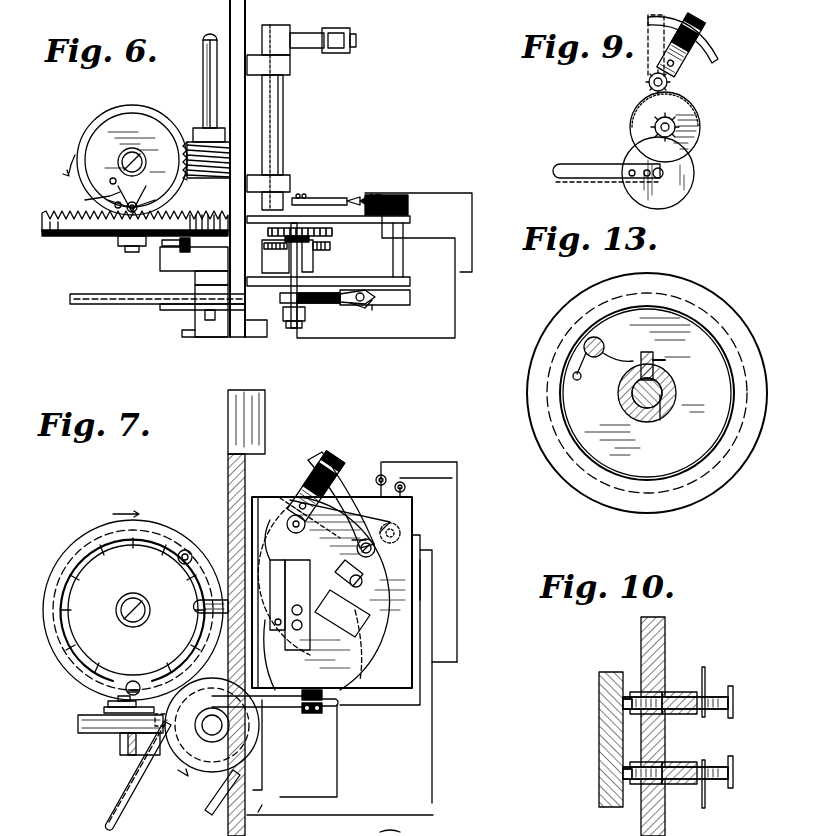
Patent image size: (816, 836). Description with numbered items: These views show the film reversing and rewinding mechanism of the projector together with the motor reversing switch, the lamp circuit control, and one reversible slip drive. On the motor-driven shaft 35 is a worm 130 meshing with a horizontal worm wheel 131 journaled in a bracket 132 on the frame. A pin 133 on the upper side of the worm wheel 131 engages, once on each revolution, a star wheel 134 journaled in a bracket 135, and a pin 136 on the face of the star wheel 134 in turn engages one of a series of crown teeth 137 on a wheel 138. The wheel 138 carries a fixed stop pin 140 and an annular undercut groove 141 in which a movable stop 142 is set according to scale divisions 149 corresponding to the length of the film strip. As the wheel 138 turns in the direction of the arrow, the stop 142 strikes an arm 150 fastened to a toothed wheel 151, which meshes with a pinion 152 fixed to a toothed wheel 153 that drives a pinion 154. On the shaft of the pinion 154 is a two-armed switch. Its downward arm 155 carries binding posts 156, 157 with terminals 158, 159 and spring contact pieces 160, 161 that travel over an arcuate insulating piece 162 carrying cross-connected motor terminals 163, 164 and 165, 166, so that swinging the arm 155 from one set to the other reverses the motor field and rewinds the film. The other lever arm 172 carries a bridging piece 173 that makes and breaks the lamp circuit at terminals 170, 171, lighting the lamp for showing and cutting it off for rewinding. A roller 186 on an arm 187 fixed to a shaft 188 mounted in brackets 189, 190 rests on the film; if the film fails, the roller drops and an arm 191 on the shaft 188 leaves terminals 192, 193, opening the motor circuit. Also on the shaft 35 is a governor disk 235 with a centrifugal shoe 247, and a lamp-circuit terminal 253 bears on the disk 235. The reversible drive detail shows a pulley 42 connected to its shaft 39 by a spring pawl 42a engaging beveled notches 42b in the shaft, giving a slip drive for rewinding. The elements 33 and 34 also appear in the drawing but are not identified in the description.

In FIG. 6, the shaft 33 is at (130, 304).
In FIG. 7, the shaft 33 is at (120, 800).
In FIG. 6, the pulley 34 is at (180, 308).
In FIG. 7, the pulley 34 is at (214, 680).
In FIG. 6, the shaft 35 is at (203, 56).
In FIG. 7, the shaft 35 is at (212, 730).
In FIG. 13, the shaft 39 is at (618, 398).
In FIG. 13, the pulley 42 is at (536, 395).
In FIG. 13, the spring pawl 42a is at (646, 354).
In FIG. 13, the beveled notches 42b is at (665, 443).
In FIG. 6, the worm 130 is at (196, 130).
In FIG. 6, the worm wheel 131 is at (80, 126).
In FIG. 7, the worm wheel 131 is at (78, 726).
In FIG. 7, the bracket 132 is at (120, 750).
In FIG. 6, the pin 133 is at (112, 178).
In FIG. 7, the pin 133 is at (104, 710).
In FIG. 6, the star wheel 134 is at (100, 194).
In FIG. 7, the star wheel 134 is at (108, 704).
In FIG. 6, the bracket 135 is at (162, 193).
In FIG. 6, the pin 136 is at (112, 205).
In FIG. 6, the crown teeth 137 is at (42, 220).
In FIG. 6, the wheel 138 is at (78, 238).
In FIG. 7, the wheel 138 is at (70, 568).
In FIG. 6, the stop pin 140 is at (130, 252).
In FIG. 7, the stop pin 140 is at (134, 681).
In FIG. 7, the annular undercut groove 141 is at (60, 662).
In FIG. 6, the movable stop 142 is at (180, 246).
In FIG. 7, the movable stop 142 is at (186, 549).
In FIG. 7, the scale divisions 149 is at (98, 530).
In FIG. 9, the arm 150 is at (578, 166).
In FIG. 7, the arm 150 is at (198, 608).
In FIG. 6, the toothed disk 151 is at (277, 256).
In FIG. 9, the toothed disk 151 is at (680, 196).
In FIG. 6, the pinion 152 is at (314, 256).
In FIG. 9, the pinion 152 is at (678, 124).
In FIG. 6, the toothed wheel 153 is at (330, 247).
In FIG. 9, the toothed wheel 153 is at (636, 123).
In FIG. 6, the pinion 154 is at (300, 232).
In FIG. 9, the pinion 154 is at (648, 84).
In FIG. 6, the arm 155 is at (305, 314).
In FIG. 10, the arm 155 is at (666, 646).
In FIG. 7, the arm 155 is at (298, 652).
In FIG. 6, the binding post 156 is at (194, 259).
In FIG. 10, the binding post 156 is at (712, 696).
In FIG. 10, the binding post 157 is at (710, 766).
In FIG. 10, the terminal 158 is at (706, 672).
In FIG. 10, the terminal 159 is at (706, 804).
In FIG. 10, the spring contact piece 160 is at (627, 696).
In FIG. 10, the spring contact piece 161 is at (627, 782).
In FIG. 6, the arcuate piece 162 is at (340, 306).
In FIG. 10, the arcuate piece 162 is at (598, 742).
In FIG. 7, the arcuate piece 162 is at (382, 580).
In FIG. 7, the motor circuit terminal 163 is at (288, 535).
In FIG. 7, the motor circuit terminal 164 is at (274, 680).
In FIG. 7, the motor circuit terminal 165 is at (362, 562).
In FIG. 7, the motor circuit terminal 166 is at (380, 598).
In FIG. 6, the terminal 170 is at (362, 292).
In FIG. 7, the terminal 170 is at (400, 530).
In FIG. 6, the terminal 171 is at (357, 306).
In FIG. 7, the terminal 171 is at (357, 483).
In FIG. 6, the lever arm 172 is at (330, 292).
In FIG. 9, the lever arm 172 is at (692, 26).
In FIG. 7, the lever arm 172 is at (332, 462).
In FIG. 6, the bridging switch 173 is at (348, 308).
In FIG. 9, the bridging switch 173 is at (695, 45).
In FIG. 7, the bridging switch 173 is at (344, 482).
In FIG. 6, the roller 186 is at (357, 40).
In FIG. 6, the arm 187 is at (303, 33).
In FIG. 6, the shaft 188 is at (293, 125).
In FIG. 6, the bracket 189 is at (290, 70).
In FIG. 6, the bracket 190 is at (290, 178).
In FIG. 6, the arm 191 is at (315, 198).
In FIG. 6, the terminal 192 is at (368, 218).
In FIG. 7, the terminal 192 is at (384, 474).
In FIG. 6, the terminal 193 is at (366, 194).
In FIG. 7, the terminal 193 is at (406, 487).
In FIG. 6, the disk 235 is at (182, 268).
In FIG. 7, the shoe 247 is at (267, 820).
In FIG. 7, the terminal 253 is at (408, 827).